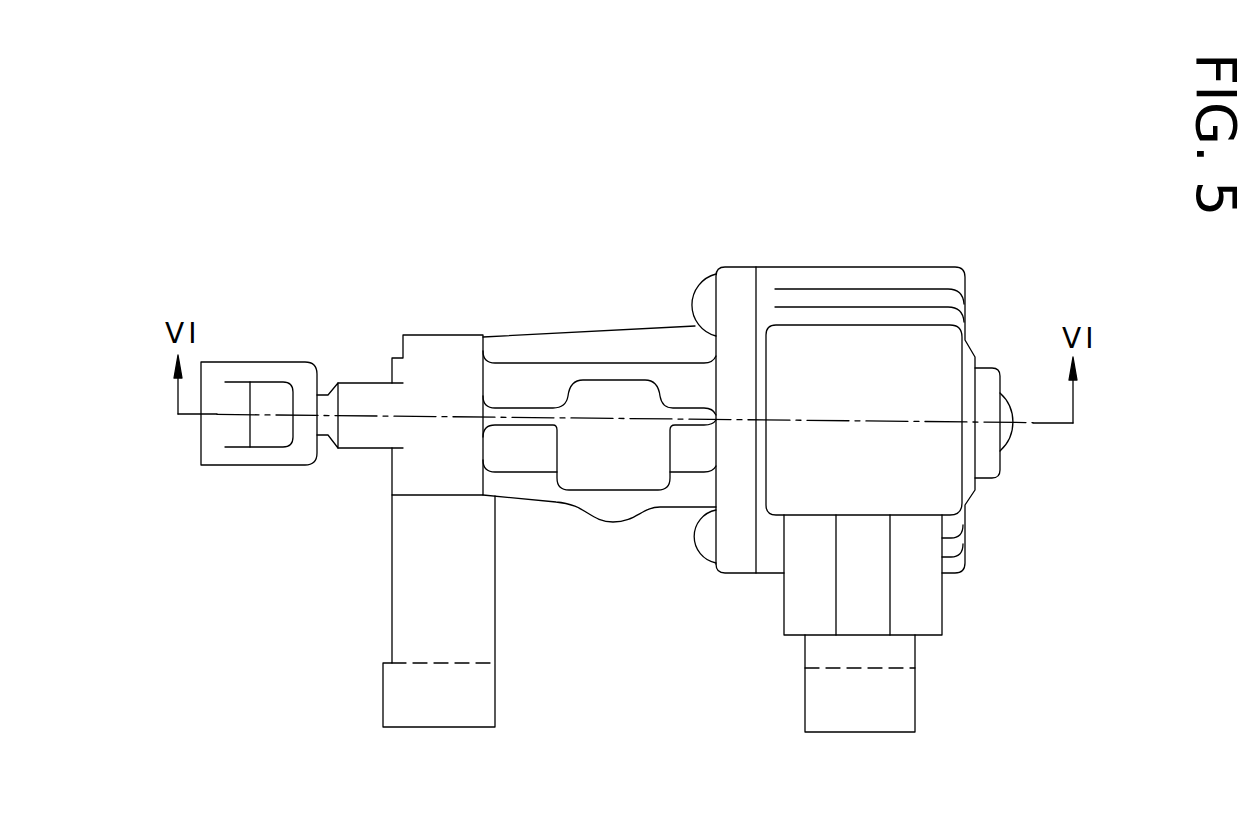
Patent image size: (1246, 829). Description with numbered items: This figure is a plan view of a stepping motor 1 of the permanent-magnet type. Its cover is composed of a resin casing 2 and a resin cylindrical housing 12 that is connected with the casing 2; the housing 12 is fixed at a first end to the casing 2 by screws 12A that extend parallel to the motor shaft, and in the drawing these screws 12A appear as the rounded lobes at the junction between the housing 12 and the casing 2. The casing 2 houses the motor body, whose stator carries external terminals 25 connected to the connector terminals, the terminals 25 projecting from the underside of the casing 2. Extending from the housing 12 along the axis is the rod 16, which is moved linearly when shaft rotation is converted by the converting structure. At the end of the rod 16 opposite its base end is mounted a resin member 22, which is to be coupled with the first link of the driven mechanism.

The permanent-magnet-type stepping motor 1 is at (908, 260).
The resin casing 2 is at (965, 292).
The resin cylindrical housing 12 is at (533, 333).
The screws 12A is at (697, 287).
The rod 16 is at (363, 383).
The resin member 22 is at (287, 362).
The external terminals 25 is at (928, 608).